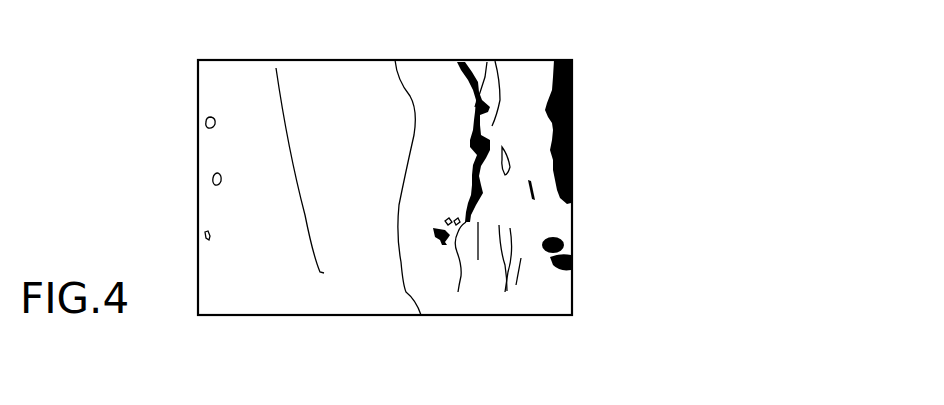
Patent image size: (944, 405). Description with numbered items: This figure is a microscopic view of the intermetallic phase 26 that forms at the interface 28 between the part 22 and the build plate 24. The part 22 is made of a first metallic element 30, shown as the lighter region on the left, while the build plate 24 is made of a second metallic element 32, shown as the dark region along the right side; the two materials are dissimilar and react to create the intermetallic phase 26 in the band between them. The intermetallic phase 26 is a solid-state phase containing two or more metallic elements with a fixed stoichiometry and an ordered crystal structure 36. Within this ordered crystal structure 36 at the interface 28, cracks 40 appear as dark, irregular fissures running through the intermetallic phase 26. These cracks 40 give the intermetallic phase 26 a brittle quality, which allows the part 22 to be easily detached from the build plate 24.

The part 22 is at (308, 60).
The build plate 24 is at (572, 73).
The intermetallic phase 26 is at (453, 151).
The interface 28 is at (485, 61).
The first metallic element 30 is at (362, 193).
The second metallic element 32 is at (571, 133).
The ordered crystal structure 36 is at (498, 315).
The cracks 40 is at (487, 148).